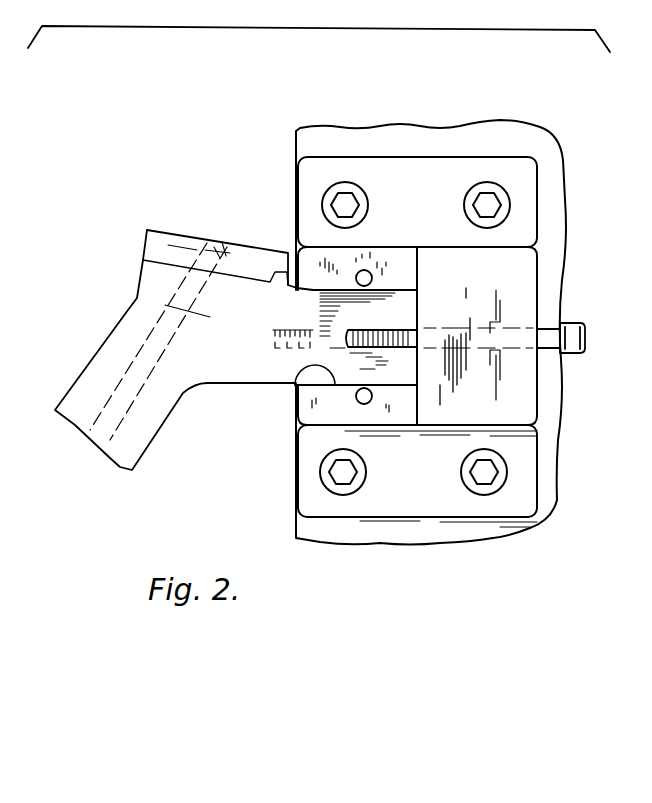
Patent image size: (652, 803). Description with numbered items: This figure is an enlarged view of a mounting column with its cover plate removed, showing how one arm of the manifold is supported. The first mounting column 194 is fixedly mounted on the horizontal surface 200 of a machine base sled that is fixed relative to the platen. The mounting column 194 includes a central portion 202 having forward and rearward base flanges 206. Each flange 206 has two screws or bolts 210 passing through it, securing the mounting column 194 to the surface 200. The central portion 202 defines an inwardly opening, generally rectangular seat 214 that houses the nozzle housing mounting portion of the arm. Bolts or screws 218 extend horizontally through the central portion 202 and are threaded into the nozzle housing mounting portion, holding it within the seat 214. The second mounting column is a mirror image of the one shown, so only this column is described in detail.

The first mounting column 194 is at (542, 262).
The horizontal surface 200 is at (503, 133).
The central portion 202 is at (517, 397).
The base flanges 206 is at (300, 177).
The screws or bolts 210 is at (463, 204).
The seat 214 is at (298, 385).
The bolts or screws 218 is at (577, 340).